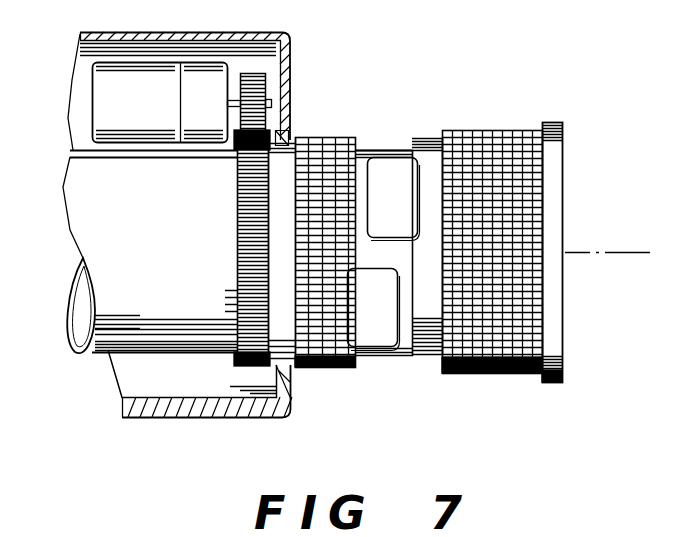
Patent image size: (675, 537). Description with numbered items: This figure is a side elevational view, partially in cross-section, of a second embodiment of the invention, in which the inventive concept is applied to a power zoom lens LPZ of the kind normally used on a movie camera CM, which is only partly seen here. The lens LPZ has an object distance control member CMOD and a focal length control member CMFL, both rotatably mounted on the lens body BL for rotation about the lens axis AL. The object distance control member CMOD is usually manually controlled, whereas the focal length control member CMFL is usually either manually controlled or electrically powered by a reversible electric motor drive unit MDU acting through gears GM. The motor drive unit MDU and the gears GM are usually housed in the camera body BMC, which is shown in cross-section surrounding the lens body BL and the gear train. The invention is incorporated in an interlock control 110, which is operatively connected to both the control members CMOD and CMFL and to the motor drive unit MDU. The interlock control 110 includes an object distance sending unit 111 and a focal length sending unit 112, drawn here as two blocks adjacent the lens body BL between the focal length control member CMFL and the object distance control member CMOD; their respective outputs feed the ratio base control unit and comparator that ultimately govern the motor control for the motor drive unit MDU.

The movie camera CM is at (297, 50).
The motor drive unit MDU is at (105, 88).
The gears GM is at (262, 90).
The lens body BL is at (80, 198).
The focal length control member CMFL is at (315, 137).
The interlock control 110 is at (382, 152).
The object distance sending unit 111 is at (394, 199).
The focal length sending unit 112 is at (374, 310).
The object distance control member CMOD is at (465, 136).
The power zoom lens LPZ is at (565, 217).
The lens axis AL is at (605, 252).
The camera body BMC is at (280, 410).